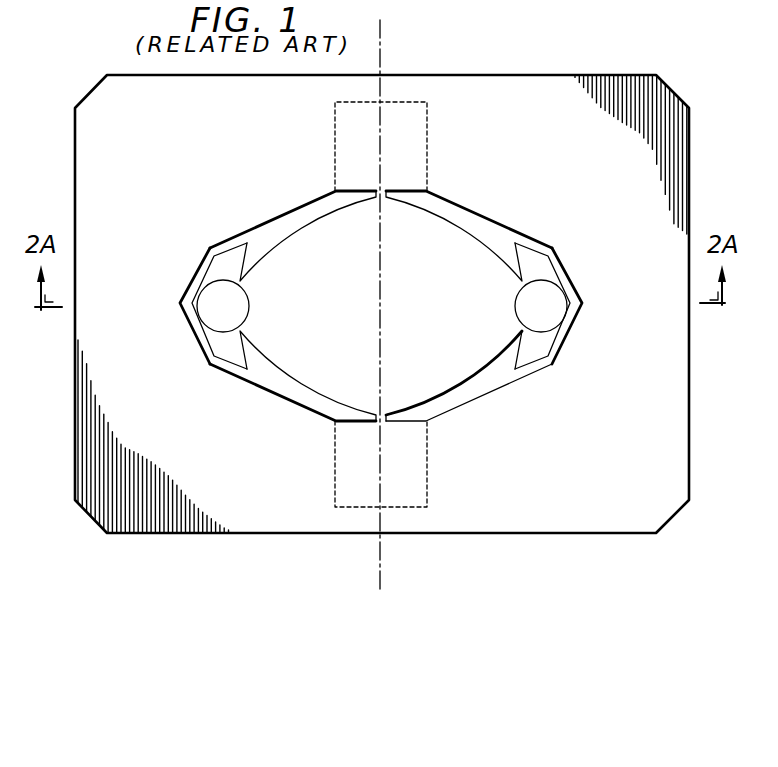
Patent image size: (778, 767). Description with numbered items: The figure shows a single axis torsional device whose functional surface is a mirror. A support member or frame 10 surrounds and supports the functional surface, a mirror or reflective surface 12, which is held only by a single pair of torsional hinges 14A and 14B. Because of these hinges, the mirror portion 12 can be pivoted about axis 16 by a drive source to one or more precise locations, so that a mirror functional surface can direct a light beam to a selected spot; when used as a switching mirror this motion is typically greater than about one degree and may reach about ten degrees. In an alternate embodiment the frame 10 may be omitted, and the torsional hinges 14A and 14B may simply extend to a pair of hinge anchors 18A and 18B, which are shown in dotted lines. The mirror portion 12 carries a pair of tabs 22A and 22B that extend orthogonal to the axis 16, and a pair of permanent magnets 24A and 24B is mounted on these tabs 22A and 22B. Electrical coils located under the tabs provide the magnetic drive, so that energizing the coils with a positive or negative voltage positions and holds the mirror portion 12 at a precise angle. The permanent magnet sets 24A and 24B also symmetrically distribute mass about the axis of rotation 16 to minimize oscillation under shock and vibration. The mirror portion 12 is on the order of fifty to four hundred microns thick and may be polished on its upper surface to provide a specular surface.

The support member 10 is at (463, 76).
The mirror or reflective surface 12 is at (381, 319).
The torsional hinge 14A is at (371, 410).
The torsional hinge 14B is at (373, 197).
The axis 16 is at (382, 247).
The hinge anchor 18A is at (335, 463).
The hinge anchor 18B is at (335, 147).
The tab 22A is at (230, 352).
The tab 22B is at (532, 350).
The permanent magnet 24A is at (243, 306).
The permanent magnet 24B is at (520, 303).